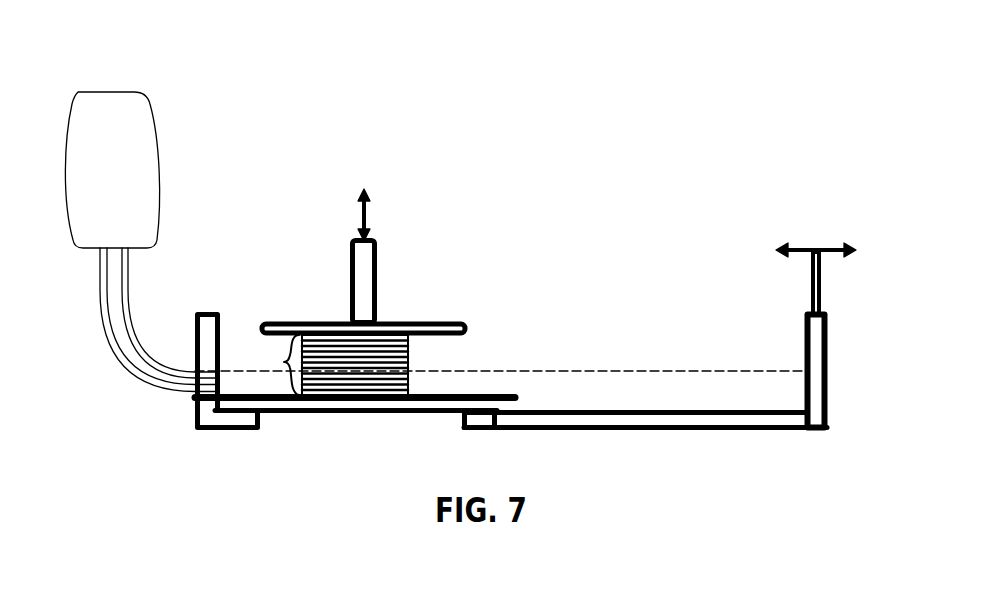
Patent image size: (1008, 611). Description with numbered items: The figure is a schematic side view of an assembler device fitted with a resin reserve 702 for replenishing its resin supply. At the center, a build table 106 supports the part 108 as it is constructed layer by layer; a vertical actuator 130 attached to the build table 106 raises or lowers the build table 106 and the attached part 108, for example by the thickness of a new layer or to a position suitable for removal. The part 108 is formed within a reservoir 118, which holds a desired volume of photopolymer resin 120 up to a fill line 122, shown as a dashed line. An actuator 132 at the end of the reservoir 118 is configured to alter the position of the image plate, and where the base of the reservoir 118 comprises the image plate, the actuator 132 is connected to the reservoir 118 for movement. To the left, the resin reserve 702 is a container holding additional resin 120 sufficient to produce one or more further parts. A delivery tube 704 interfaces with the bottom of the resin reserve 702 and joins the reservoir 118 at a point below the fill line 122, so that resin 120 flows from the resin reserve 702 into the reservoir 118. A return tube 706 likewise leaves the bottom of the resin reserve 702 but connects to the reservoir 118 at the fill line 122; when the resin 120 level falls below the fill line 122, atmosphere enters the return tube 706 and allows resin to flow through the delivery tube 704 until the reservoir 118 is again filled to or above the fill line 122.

The resin reserve 702 is at (130, 112).
The delivery tube 704 is at (130, 374).
The return tube 706 is at (128, 323).
The part 108 is at (284, 362).
The vertical actuator 130 is at (360, 213).
The build table 106 is at (468, 325).
The fill line 122 is at (670, 368).
The resin 120 is at (673, 390).
The actuator 132 is at (820, 248).
The reservoir 118 is at (817, 347).